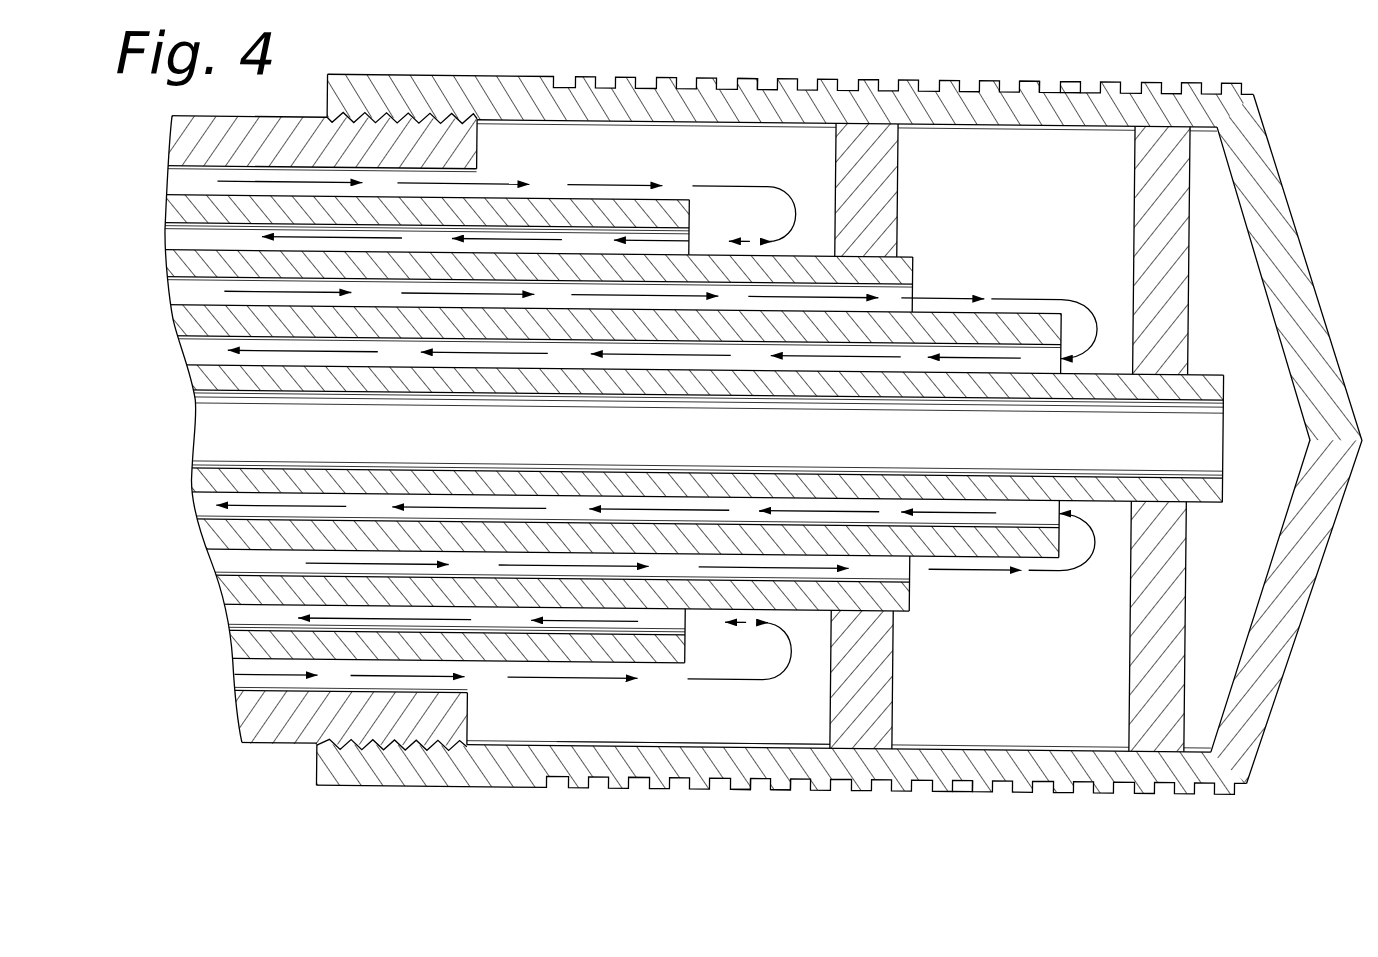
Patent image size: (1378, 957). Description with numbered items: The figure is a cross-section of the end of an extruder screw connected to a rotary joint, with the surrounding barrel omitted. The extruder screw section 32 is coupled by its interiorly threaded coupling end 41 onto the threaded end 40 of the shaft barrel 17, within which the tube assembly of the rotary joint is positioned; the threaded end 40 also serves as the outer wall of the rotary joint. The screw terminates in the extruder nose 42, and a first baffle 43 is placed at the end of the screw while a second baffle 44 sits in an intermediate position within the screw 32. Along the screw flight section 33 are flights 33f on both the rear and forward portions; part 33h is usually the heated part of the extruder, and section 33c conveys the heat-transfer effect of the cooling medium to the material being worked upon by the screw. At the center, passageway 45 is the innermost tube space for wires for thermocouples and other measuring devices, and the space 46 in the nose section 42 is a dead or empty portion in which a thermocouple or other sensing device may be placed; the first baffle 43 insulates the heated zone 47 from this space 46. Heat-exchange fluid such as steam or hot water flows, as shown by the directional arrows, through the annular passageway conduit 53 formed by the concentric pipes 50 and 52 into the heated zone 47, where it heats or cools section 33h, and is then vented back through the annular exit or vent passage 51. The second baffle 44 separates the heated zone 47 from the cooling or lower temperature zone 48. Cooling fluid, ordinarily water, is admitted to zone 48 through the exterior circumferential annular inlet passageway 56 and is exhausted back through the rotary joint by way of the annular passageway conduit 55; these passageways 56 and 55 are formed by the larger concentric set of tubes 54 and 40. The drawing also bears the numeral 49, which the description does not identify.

The shaft barrel 17 is at (258, 115).
The extruder screw section 32 is at (506, 73).
The screw flight section 33 is at (1180, 54).
The screw section 33c is at (770, 91).
The flights 33f is at (1025, 80).
The heated part of screw flight section 33h is at (1080, 99).
The threaded end of shaft barrel 40 is at (474, 156).
The interiorly threaded coupling end 41 is at (324, 95).
The extruder nose 42 is at (1297, 216).
The first baffle 43 is at (1133, 243).
The second baffle 44 is at (895, 166).
The passageway 45 is at (217, 423).
The space 46 is at (1247, 324).
The heated zone 47 is at (1024, 208).
The cooling or lower temperature zone 48 is at (742, 724).
The inner tube 49 is at (1213, 380).
The concentric pipe 50 is at (1068, 296).
The annular exit or vent passage 51 is at (197, 348).
The concentric pipe 52 is at (902, 265).
The annular passageway conduit 53 is at (183, 291).
The tube 54 is at (684, 212).
The annular passageway conduit 55 is at (190, 236).
The exterior circumferential annular inlet passageway 56 is at (180, 179).